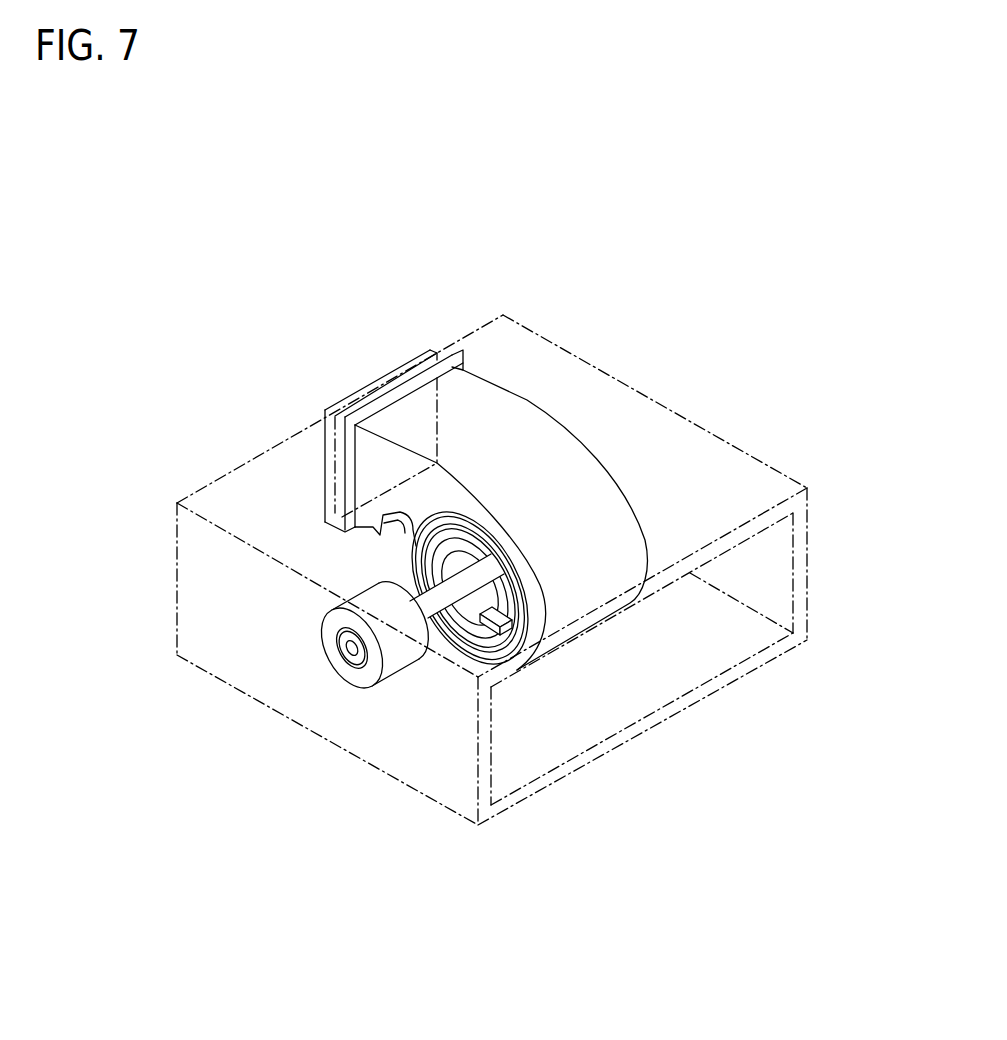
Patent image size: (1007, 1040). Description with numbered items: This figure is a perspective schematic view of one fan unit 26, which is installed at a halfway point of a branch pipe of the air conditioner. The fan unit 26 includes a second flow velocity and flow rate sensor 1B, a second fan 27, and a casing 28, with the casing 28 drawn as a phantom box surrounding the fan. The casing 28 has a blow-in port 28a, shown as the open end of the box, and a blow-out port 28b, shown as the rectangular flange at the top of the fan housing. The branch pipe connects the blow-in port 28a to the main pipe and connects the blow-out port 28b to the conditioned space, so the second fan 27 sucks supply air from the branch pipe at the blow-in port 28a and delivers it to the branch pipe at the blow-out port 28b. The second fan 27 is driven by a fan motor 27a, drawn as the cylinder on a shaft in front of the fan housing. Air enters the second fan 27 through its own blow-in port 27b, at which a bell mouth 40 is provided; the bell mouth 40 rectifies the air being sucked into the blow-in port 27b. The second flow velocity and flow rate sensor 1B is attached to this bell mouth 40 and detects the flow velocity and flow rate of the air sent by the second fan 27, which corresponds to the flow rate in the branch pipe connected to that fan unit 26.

The fan unit 26 is at (663, 315).
The second fan 27 is at (527, 400).
The fan motor 27a is at (392, 667).
The blow-in port of the second fan 27b is at (465, 607).
The casing 28 is at (717, 437).
The blow-in port 28a is at (653, 693).
The blow-out port 28b is at (335, 457).
The bell mouth 40 is at (510, 592).
The second flow velocity and flow rate sensor 1B is at (500, 620).